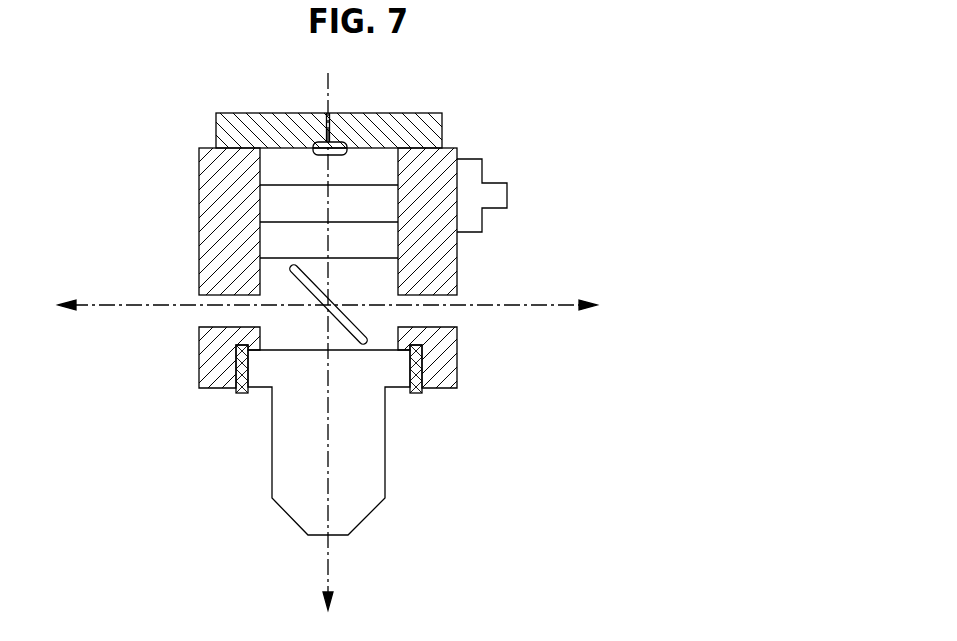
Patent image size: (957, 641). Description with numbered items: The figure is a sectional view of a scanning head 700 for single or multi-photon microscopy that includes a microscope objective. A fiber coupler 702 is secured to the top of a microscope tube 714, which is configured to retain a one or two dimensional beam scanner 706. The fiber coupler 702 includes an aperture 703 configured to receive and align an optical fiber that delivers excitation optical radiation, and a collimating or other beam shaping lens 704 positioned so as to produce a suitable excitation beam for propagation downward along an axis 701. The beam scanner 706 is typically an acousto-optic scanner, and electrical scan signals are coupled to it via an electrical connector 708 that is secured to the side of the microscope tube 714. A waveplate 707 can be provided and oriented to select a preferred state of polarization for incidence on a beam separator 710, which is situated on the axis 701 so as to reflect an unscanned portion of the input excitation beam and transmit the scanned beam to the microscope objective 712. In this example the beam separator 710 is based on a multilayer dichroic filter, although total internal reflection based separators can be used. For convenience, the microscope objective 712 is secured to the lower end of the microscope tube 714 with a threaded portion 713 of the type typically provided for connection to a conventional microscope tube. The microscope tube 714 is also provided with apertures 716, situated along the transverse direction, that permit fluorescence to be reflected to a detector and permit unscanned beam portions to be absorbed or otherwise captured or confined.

The laser processing head 700 is at (600, 53).
The axis 701 is at (328, 562).
The fiber coupler 702 is at (415, 113).
The aperture 703 is at (330, 110).
The collimating or other beam shaping lens 704 is at (330, 157).
The beam scanner 706 is at (318, 220).
The waveplate 707 is at (278, 232).
The electrical connector 708 is at (488, 182).
The beam separator 710 is at (350, 317).
The microscope objective 712 is at (257, 452).
The threaded portion 713 is at (250, 386).
The microscope tube 714 is at (458, 282).
The aperture 716 is at (456, 300).